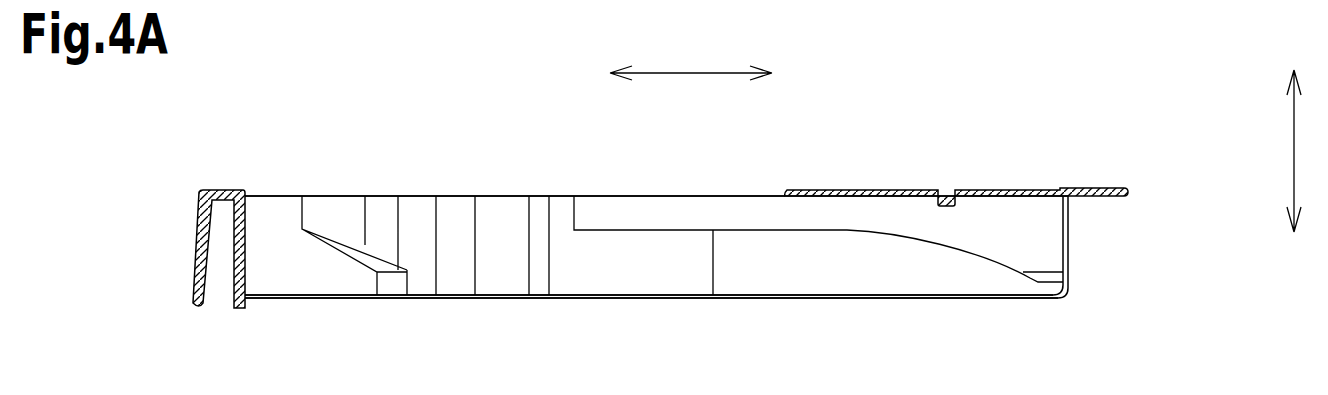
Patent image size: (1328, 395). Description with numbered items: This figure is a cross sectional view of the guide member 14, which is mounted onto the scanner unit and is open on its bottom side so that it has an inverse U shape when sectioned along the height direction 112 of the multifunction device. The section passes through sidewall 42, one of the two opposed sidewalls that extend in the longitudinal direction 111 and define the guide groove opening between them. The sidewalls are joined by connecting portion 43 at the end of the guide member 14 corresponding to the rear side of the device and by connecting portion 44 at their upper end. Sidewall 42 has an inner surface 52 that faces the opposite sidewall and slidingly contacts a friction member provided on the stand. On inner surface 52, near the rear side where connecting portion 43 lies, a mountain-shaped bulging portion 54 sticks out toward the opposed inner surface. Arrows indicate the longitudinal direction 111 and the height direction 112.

The guide member 14 is at (360, 355).
The sidewall 42 is at (383, 184).
The connecting portion 43 is at (220, 189).
The connecting portion 44 is at (860, 188).
The inner surface 52 is at (620, 283).
The bulging portion 54 is at (436, 281).
The longitudinal direction 111 is at (692, 73).
The height direction 112 is at (1294, 150).